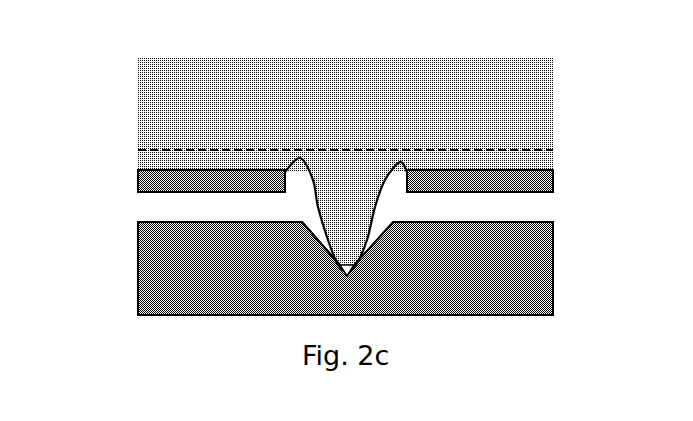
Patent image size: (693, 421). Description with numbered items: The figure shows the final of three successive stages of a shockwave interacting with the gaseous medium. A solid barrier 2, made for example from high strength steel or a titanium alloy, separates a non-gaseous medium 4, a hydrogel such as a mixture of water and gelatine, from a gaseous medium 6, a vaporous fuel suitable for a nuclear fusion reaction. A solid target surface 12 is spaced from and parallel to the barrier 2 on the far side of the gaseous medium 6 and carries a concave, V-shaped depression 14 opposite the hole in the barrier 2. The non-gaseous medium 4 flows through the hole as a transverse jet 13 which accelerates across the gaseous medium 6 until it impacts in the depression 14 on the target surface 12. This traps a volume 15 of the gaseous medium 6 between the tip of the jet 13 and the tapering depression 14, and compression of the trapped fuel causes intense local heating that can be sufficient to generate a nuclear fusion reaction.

The solid barrier 2 is at (170, 178).
The non-gaseous medium 4 is at (507, 108).
The gaseous medium 6 is at (503, 205).
The solid target surface 12 is at (175, 272).
The transverse jet 13 is at (380, 195).
The depression 14 is at (307, 233).
The trapped volume 15 is at (347, 272).